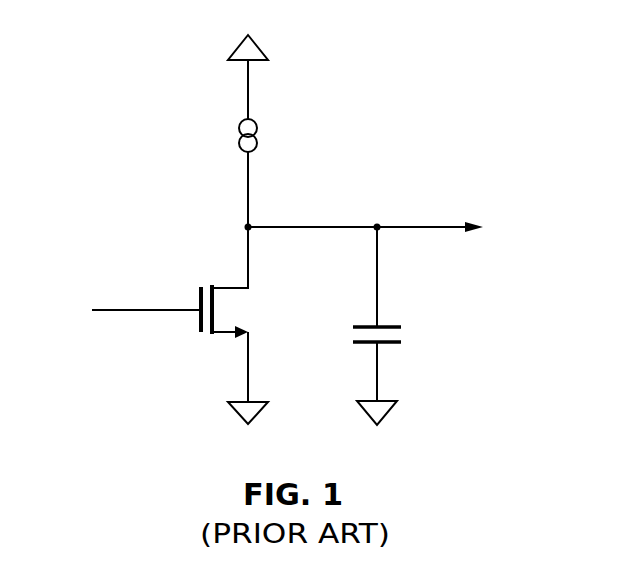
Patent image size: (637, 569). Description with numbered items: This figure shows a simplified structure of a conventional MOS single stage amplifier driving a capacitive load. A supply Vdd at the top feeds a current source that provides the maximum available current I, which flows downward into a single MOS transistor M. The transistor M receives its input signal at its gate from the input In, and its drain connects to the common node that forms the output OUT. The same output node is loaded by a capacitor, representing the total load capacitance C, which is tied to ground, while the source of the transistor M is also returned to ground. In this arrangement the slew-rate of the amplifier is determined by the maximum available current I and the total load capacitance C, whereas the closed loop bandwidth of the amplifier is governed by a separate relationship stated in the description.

The supply voltage Vdd is at (248, 60).
The maximum available current I is at (271, 172).
The output node OUT is at (390, 232).
The total load capacitance C is at (385, 325).
The transistor M with W/L ratio M is at (253, 325).
The input In is at (146, 295).